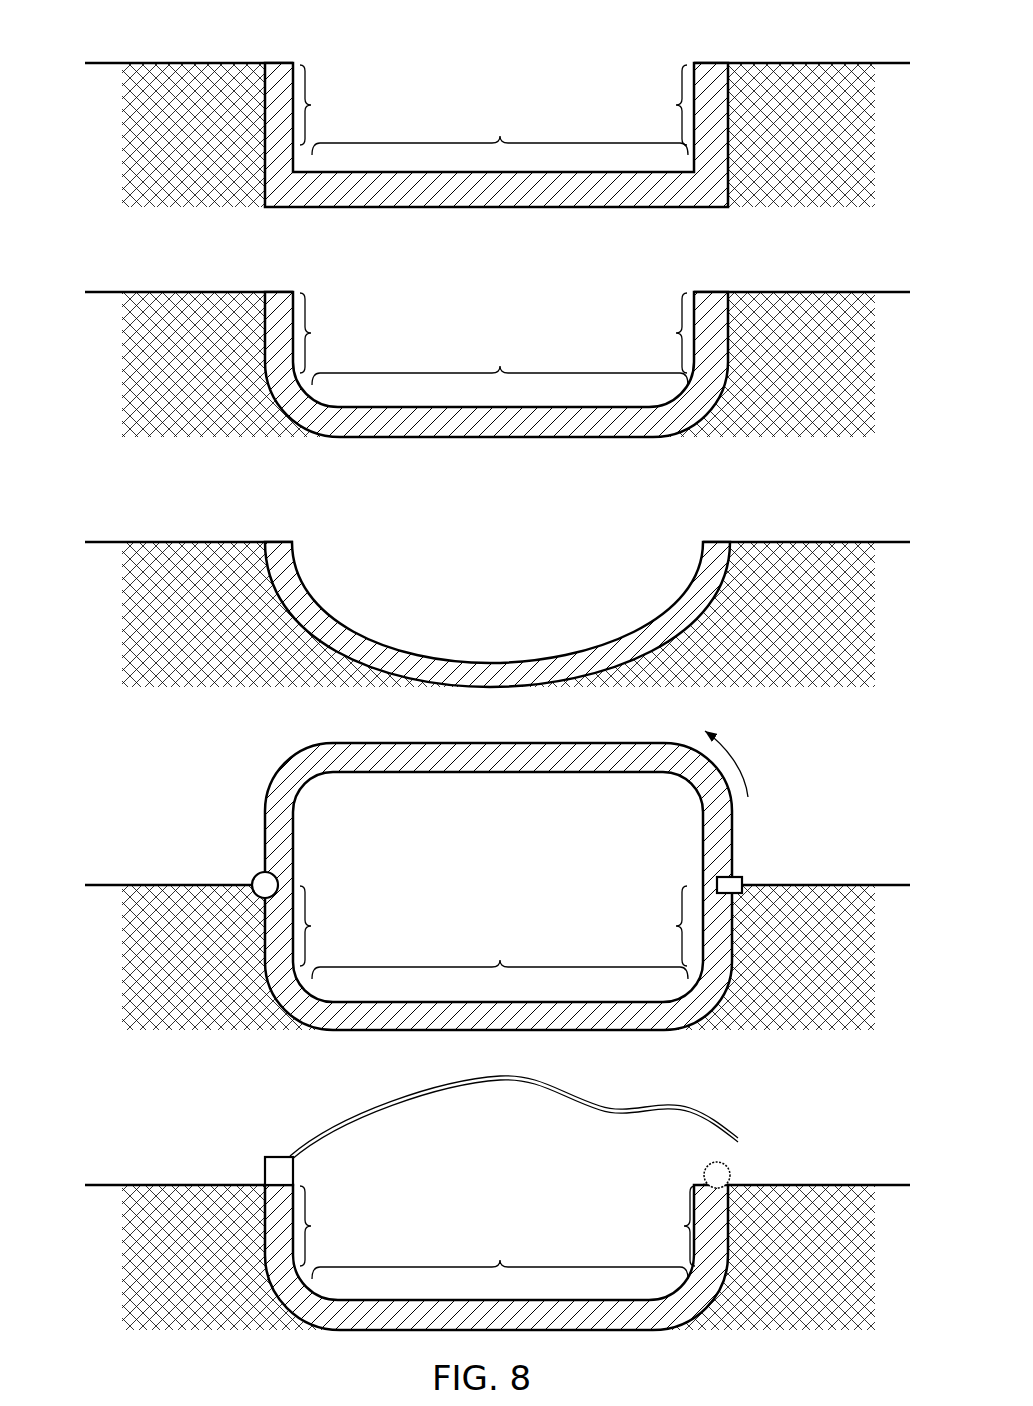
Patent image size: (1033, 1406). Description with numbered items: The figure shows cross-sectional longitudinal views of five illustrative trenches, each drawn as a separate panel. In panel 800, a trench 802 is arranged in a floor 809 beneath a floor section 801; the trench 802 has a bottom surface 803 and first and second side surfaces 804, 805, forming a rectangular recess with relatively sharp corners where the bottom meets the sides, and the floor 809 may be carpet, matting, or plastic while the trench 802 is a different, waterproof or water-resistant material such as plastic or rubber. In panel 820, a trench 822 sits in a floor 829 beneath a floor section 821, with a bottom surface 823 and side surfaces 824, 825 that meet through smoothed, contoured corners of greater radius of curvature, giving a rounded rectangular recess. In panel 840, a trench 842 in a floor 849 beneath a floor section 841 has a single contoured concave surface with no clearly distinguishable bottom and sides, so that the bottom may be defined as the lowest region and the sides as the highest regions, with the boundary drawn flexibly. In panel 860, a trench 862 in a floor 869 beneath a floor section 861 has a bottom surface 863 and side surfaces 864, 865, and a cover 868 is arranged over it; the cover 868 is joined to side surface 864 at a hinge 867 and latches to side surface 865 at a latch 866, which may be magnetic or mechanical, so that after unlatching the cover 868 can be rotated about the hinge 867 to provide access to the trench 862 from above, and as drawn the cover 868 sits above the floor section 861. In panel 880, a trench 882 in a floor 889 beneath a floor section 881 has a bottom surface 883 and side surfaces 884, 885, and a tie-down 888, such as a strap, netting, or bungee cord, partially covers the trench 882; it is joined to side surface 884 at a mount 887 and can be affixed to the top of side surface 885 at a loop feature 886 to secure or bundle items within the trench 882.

The panel 800 is at (470, 111).
The floor section 801 is at (498, 135).
The trench 802 is at (704, 58).
The bottom surface 803 is at (500, 131).
The side surface 804 is at (329, 105).
The side surface 805 is at (658, 105).
The floor 809 is at (761, 58).
The panel 820 is at (470, 341).
The floor section 821 is at (498, 364).
The trench 822 is at (712, 287).
The bottom surface 823 is at (500, 361).
The side surface 824 is at (329, 333).
The side surface 825 is at (658, 333).
The floor 829 is at (766, 287).
The panel 840 is at (462, 591).
The floor section 841 is at (498, 614).
The trench 842 is at (712, 537).
The floor 849 is at (766, 537).
The panel 860 is at (470, 880).
The floor section 861 is at (498, 957).
The trench 862 is at (445, 996).
The bottom surface 863 is at (500, 954).
The side surface 864 is at (329, 926).
The side surface 865 is at (658, 926).
The latch 866 is at (745, 877).
The hinge 867 is at (252, 876).
The cover 868 is at (515, 778).
The floor 869 is at (766, 880).
The panel 880 is at (470, 1203).
The floor section 881 is at (498, 1257).
The trench 882 is at (462, 1296).
The bottom surface 883 is at (500, 1255).
The side surface 884 is at (329, 1226).
The side surface 885 is at (665, 1226).
The feature 886 is at (702, 1175).
The mount 887 is at (262, 1162).
The tie-down 888 is at (556, 1112).
The floor 889 is at (766, 1182).